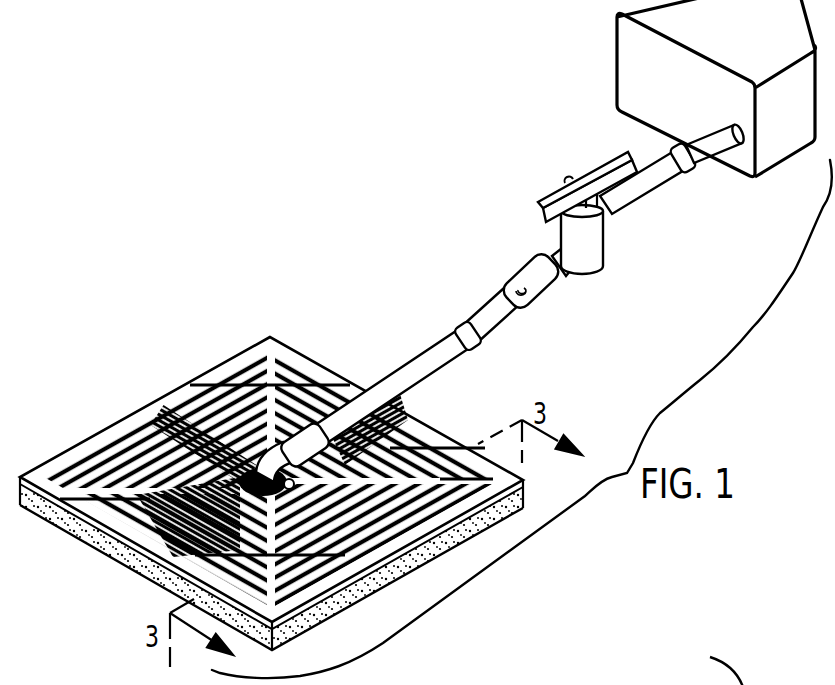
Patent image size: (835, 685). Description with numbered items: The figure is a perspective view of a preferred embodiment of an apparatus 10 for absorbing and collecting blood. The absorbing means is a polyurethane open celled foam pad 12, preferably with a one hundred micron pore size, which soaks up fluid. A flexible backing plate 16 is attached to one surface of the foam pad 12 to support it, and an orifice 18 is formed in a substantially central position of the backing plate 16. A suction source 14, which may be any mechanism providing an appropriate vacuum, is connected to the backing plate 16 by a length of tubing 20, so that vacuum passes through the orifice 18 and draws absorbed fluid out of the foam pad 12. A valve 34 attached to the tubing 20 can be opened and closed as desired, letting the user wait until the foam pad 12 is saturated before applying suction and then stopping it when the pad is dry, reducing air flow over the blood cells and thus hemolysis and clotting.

The apparatus 10 is at (294, 224).
The foam pad 12 is at (147, 575).
The suction source 14 is at (640, 48).
The backing plate 16 is at (266, 370).
The orifice 18 is at (174, 393).
The tubing 20 is at (441, 352).
The valve 34 is at (588, 233).